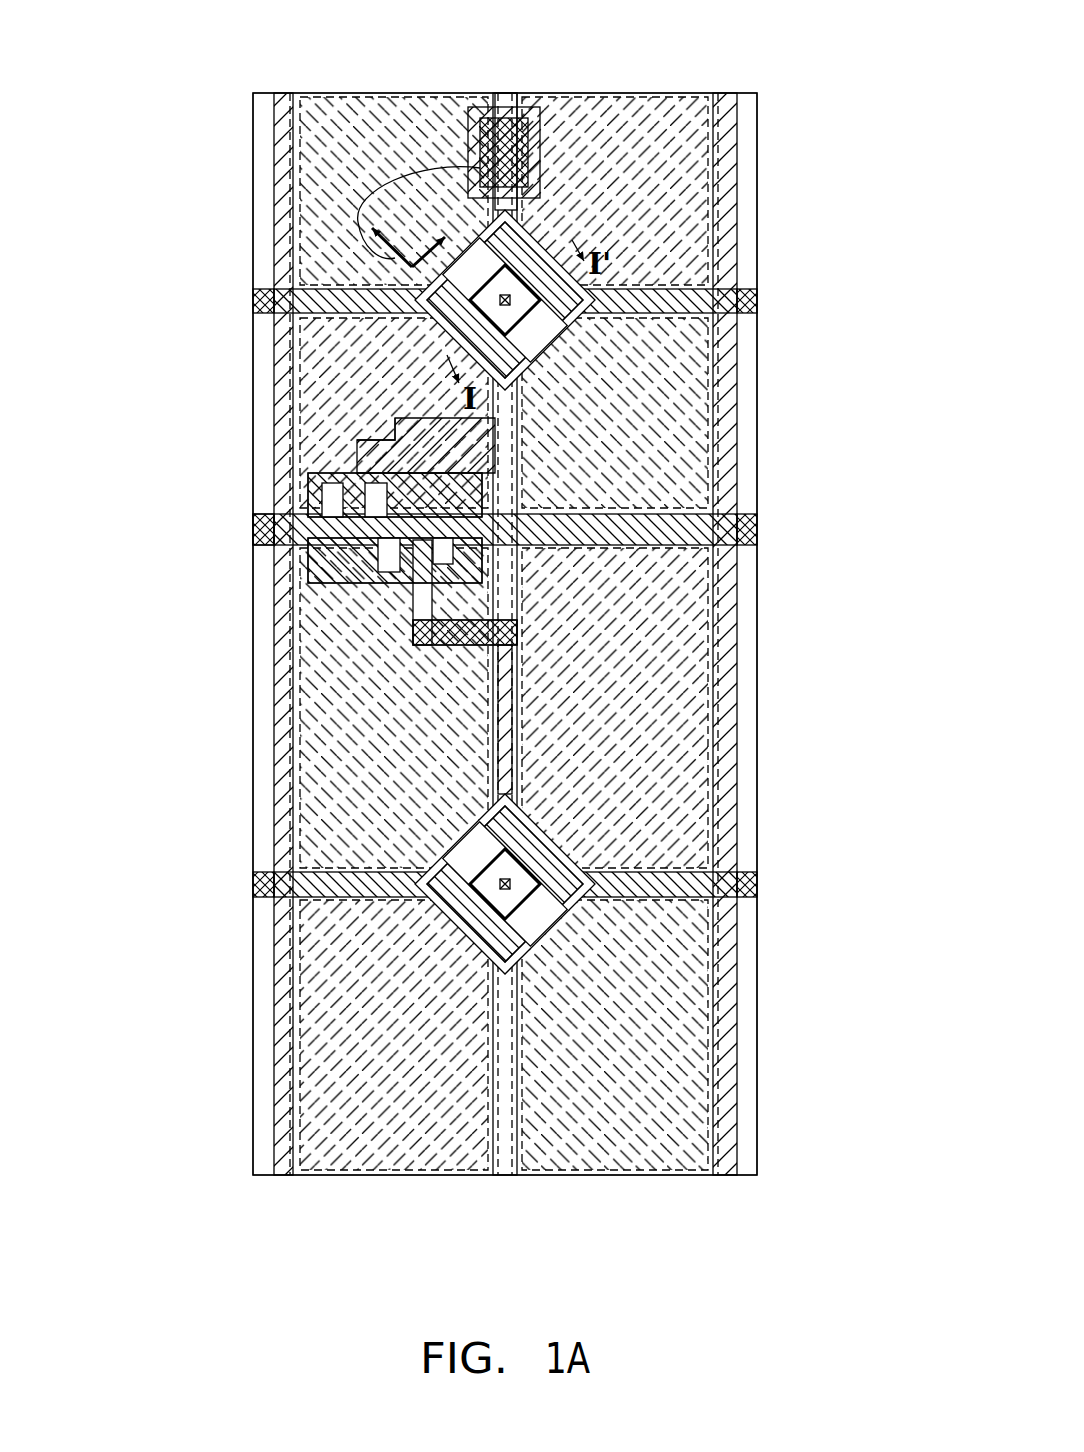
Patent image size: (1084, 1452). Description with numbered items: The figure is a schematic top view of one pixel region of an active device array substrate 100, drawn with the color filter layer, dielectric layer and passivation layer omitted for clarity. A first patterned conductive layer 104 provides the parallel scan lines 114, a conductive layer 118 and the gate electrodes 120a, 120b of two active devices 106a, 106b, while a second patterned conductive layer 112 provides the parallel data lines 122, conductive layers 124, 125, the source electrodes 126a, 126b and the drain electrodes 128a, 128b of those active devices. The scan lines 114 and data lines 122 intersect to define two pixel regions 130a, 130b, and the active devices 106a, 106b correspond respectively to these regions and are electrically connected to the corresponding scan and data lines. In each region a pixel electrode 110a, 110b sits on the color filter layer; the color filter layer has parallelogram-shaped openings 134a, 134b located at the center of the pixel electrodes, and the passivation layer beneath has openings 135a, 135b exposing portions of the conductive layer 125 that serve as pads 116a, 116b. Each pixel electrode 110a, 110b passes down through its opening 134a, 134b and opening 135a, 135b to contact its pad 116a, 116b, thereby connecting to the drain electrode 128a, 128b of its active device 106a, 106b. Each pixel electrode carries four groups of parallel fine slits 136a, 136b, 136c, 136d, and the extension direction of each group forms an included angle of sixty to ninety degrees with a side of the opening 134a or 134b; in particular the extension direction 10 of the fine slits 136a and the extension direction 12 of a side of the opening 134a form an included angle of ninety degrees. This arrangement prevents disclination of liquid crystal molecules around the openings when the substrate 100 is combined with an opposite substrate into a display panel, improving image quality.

The active device array substrate 100 is at (897, 1254).
The extension direction of the fine slits 10 is at (300, 172).
The extension direction of a side of the opening 12 is at (425, 222).
The patterned conductive layer 104 is at (599, 589).
The patterned conductive layer 112 is at (397, 634).
The pixel electrode 110a is at (478, 107).
The pixel electrode 110b is at (565, 1178).
The scan line 114 is at (757, 543).
The conductive layer 118 is at (757, 300).
The pad 116a is at (643, 259).
The pad 116b is at (643, 909).
The gate electrode 120a is at (400, 470).
The gate electrode 120b is at (440, 600).
The data line 122 is at (285, 232).
The conductive layer 124 is at (300, 172).
The conductive layer 125 is at (440, 430).
The source electrode 126a is at (320, 493).
The source electrode 126b is at (320, 562).
The drain electrode 128a is at (397, 480).
The drain electrode 128b is at (430, 590).
The pixel region 130a is at (507, 262).
The pixel region 130b is at (667, 1102).
The opening 134a is at (540, 262).
The opening 134b is at (500, 950).
The opening 135a is at (501, 294).
The opening 135b is at (508, 897).
The fine slits 136a is at (330, 95).
The fine slits 136b is at (582, 95).
The fine slits 136c is at (690, 385).
The fine slits 136d is at (300, 355).
The active device 106a is at (328, 526).
The active device 106b is at (443, 613).